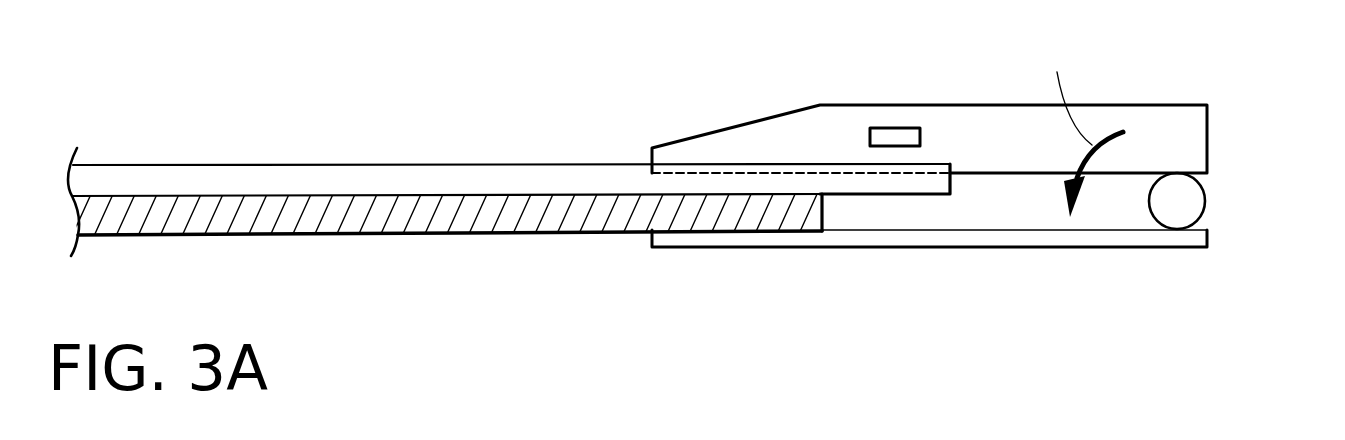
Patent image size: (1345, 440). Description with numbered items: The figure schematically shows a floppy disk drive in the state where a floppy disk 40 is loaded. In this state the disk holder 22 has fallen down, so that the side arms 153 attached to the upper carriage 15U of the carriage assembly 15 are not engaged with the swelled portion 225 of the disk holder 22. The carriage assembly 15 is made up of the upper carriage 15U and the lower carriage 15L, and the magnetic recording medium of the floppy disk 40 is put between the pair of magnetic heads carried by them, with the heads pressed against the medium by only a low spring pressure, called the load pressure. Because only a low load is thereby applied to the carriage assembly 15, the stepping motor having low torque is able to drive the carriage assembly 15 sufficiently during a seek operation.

The disk holder 22 is at (137, 185).
The floppy disk 40 is at (150, 227).
The carriage assembly 15 is at (987, 189).
The upper carriage 15U is at (777, 115).
The lower carriage 15L is at (847, 248).
The side arms 153 is at (897, 128).
The swelled portion 225 is at (897, 183).